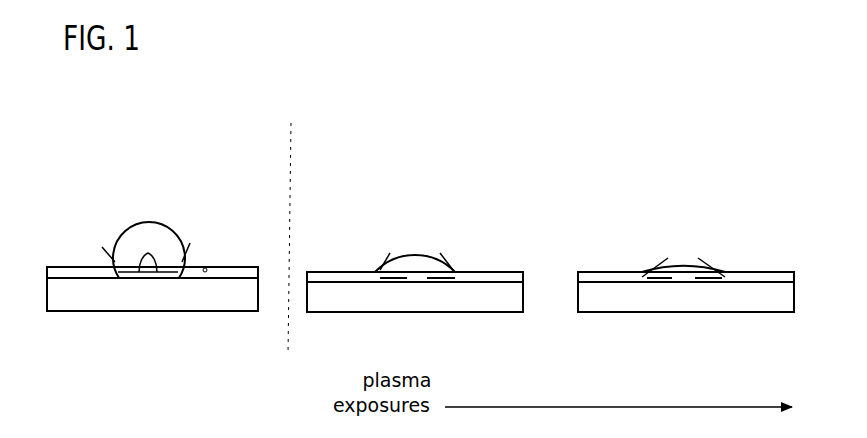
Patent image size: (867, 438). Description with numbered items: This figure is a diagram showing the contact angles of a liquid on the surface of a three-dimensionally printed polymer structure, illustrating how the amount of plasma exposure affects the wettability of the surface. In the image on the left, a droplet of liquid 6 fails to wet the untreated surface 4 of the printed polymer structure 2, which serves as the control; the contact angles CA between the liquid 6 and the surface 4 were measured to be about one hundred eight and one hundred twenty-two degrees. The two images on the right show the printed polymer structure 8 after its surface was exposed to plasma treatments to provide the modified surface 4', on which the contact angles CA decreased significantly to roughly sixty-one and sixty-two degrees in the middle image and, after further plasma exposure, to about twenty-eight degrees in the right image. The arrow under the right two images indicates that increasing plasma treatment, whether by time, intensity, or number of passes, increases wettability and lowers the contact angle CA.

The 3D printed polymer structure 2 is at (68, 178).
The untreated surface 4 is at (133, 248).
The liquid droplet 6 is at (145, 222).
The 3D-printed polymer structure 8 is at (512, 150).
The modified surface 4' is at (550, 238).
The contact angle CA is at (202, 228).